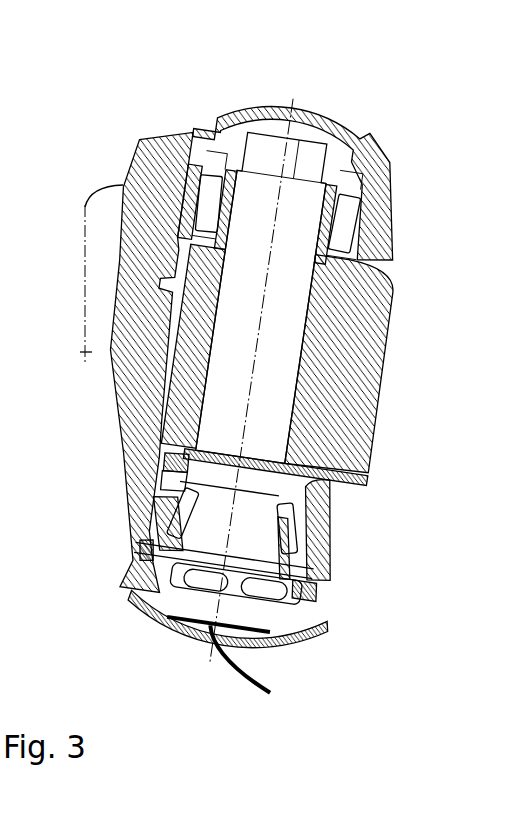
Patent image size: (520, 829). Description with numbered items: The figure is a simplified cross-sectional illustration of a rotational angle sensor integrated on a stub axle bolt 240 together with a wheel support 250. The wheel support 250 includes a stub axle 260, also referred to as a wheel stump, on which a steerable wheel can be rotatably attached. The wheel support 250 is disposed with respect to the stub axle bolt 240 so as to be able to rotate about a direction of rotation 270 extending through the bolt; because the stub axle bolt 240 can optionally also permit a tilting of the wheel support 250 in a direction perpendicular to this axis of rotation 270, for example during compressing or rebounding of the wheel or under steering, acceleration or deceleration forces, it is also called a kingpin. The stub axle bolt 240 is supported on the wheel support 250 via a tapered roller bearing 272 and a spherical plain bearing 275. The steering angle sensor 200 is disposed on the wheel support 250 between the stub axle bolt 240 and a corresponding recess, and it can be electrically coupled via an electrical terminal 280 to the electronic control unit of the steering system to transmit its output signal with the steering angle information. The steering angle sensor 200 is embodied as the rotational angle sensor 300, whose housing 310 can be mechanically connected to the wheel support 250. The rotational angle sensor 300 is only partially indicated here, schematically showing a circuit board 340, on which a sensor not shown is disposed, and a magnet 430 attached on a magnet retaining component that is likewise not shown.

The steering angle sensor 200 is at (261, 387).
The rotational angle sensor 300 is at (261, 387).
The stub axle bolt 240 is at (264, 298).
The wheel support 250 is at (146, 358).
The stub axle 260 is at (83, 352).
The direction of rotation 270 is at (295, 179).
The tapered roller bearing 272 is at (273, 208).
The spherical plain bearing 275 is at (245, 519).
The electrical terminal 280 is at (218, 655).
The housing 310 is at (227, 625).
The circuit board 340 is at (236, 583).
The magnet 430 is at (235, 525).